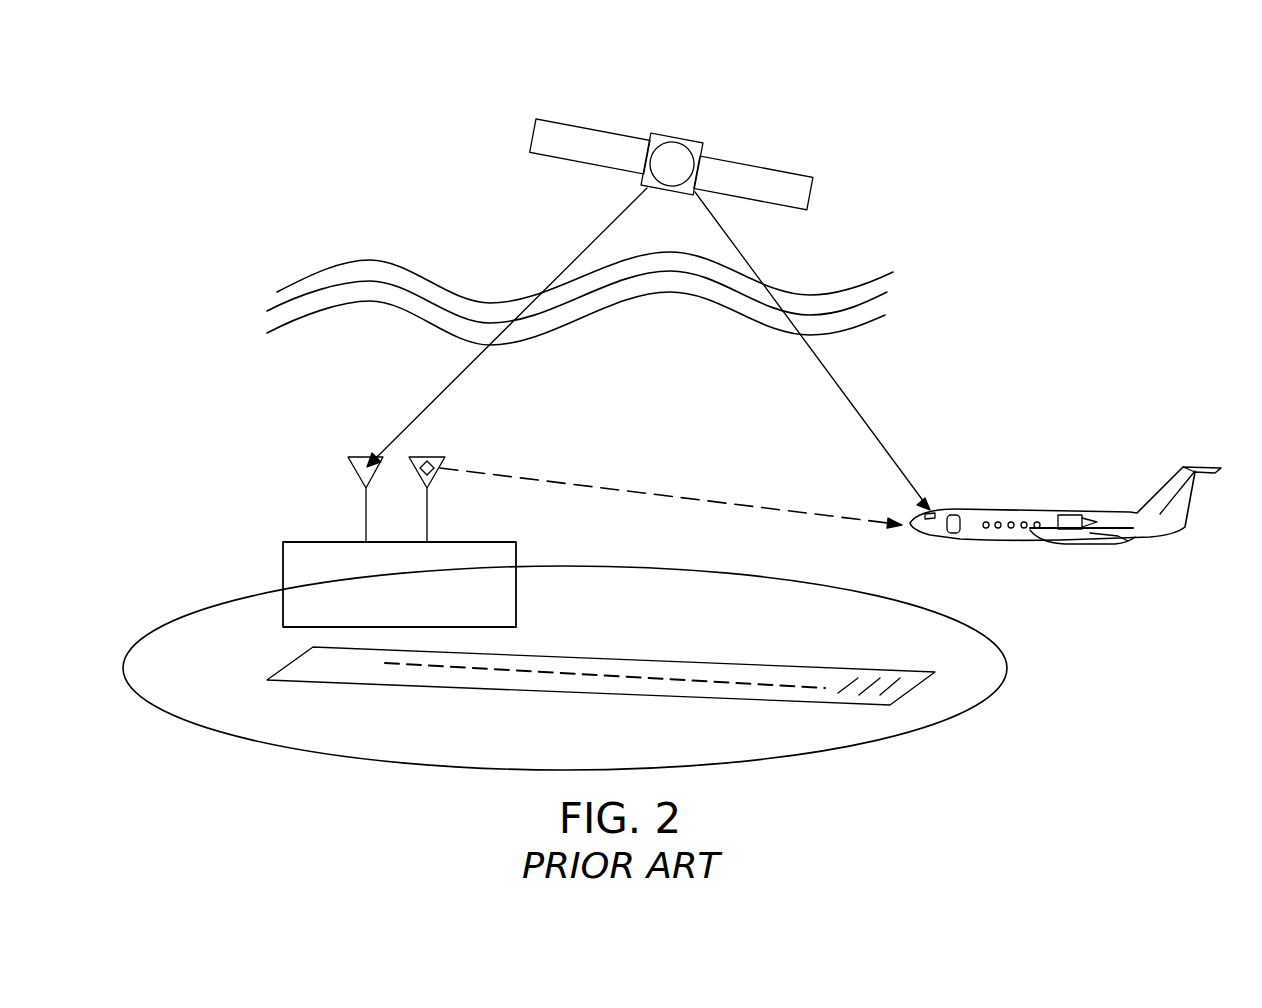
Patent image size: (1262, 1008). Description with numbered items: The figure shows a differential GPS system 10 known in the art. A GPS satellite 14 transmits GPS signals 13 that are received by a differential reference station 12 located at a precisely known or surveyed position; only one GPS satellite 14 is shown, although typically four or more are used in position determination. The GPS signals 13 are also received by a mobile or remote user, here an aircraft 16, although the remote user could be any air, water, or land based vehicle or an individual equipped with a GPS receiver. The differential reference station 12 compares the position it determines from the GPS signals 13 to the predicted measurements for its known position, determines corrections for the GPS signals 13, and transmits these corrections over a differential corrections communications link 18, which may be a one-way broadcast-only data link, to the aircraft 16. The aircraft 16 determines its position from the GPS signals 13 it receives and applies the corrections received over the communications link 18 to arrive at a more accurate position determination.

The differential GPS system 10 is at (672, 412).
The differential reference station 12 is at (320, 542).
The GPS signals 13 is at (607, 225).
The GPS satellite 14 is at (695, 138).
The aircraft 16 is at (1062, 510).
The differential corrections communications link 18 is at (665, 493).